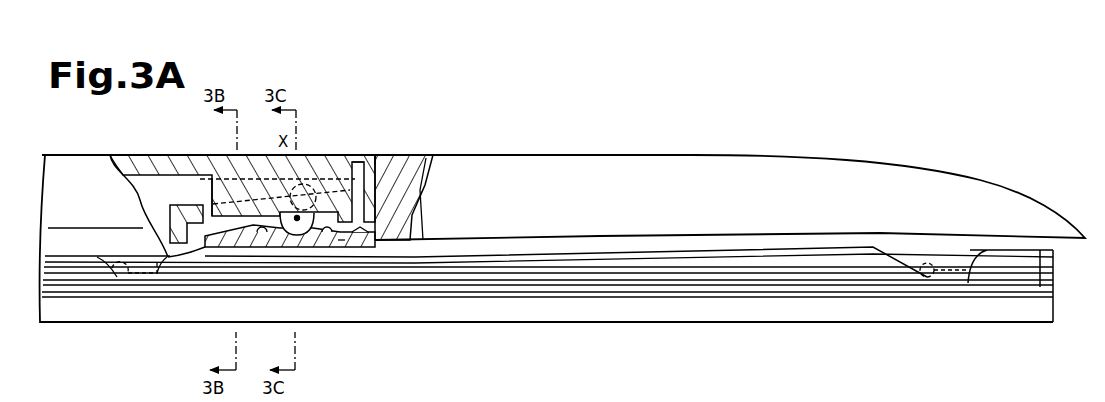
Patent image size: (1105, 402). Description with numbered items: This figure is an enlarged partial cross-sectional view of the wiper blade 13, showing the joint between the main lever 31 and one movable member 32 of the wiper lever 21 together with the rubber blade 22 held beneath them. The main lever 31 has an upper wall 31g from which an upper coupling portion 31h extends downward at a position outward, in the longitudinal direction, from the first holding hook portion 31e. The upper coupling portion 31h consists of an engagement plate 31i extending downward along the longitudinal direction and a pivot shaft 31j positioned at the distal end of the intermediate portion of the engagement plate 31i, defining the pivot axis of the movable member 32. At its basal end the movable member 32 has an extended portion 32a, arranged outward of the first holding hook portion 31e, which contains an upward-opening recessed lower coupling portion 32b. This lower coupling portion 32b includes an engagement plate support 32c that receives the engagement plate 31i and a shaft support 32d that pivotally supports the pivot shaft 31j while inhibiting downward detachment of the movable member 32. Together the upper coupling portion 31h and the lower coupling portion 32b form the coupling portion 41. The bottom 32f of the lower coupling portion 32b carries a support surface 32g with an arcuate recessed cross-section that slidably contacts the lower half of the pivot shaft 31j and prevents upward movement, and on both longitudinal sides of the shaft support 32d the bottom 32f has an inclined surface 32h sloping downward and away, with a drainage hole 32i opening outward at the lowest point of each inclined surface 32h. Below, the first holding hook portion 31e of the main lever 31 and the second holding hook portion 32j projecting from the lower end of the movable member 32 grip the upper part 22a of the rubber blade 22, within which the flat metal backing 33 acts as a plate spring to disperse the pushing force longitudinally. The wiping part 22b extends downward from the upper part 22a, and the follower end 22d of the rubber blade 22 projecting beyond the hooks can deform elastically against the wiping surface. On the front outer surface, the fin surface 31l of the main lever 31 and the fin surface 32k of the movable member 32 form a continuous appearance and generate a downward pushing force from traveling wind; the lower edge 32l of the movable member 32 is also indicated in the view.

The wiper blade 13 is at (510, 119).
The wiper lever 21 is at (458, 152).
The rubber blade 22 is at (528, 323).
The upper part 22a is at (757, 253).
The wiping part 22b is at (810, 323).
The follower end 22d is at (969, 323).
The main lever 31 is at (55, 153).
The first holding hook portion 31e is at (112, 268).
The upper wall 31g is at (248, 162).
The upper coupling portion 31h is at (246, 234).
The engagement plate 31i is at (248, 224).
The pivot shaft 31j is at (343, 162).
The fin surface 31l is at (98, 153).
The movable member 32 is at (718, 157).
The extended portion 32a is at (178, 200).
The lower coupling portion 32b is at (224, 176).
The engagement plate support 32c is at (352, 161).
The shaft support 32d is at (299, 174).
The bottom 32f is at (339, 246).
The support surface 32g is at (297, 237).
The inclined surface 32h is at (262, 233).
The drainage hole 32i is at (358, 234).
The second holding hook portion 32j is at (922, 278).
The fin surface 32k is at (638, 158).
The lower edge 32l is at (198, 248).
The backing 33 is at (828, 259).
The coupling portion 41 is at (366, 228).